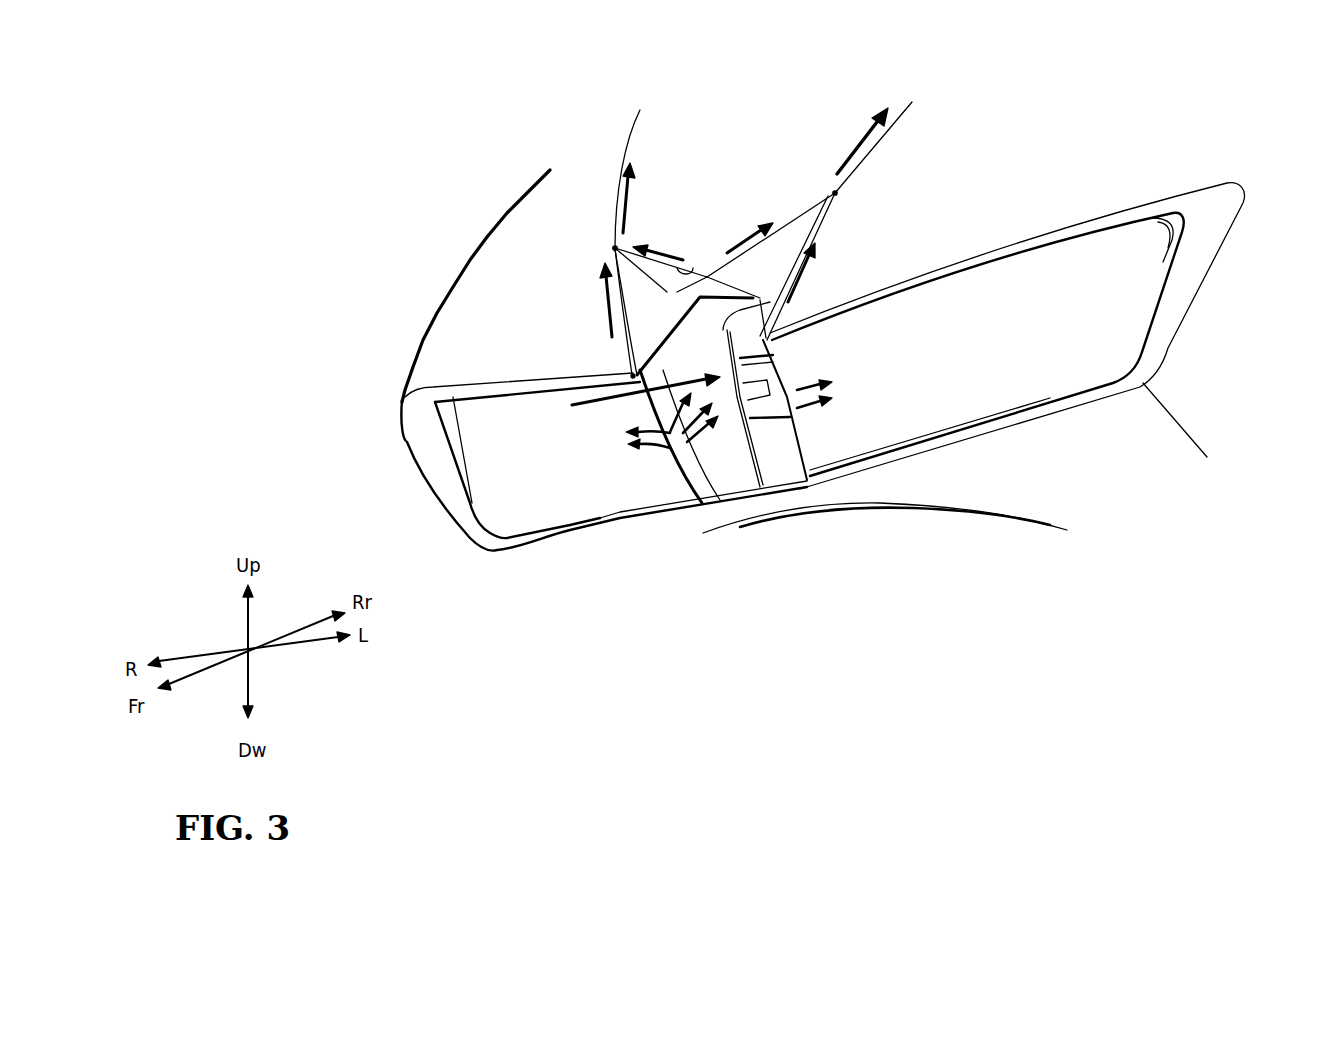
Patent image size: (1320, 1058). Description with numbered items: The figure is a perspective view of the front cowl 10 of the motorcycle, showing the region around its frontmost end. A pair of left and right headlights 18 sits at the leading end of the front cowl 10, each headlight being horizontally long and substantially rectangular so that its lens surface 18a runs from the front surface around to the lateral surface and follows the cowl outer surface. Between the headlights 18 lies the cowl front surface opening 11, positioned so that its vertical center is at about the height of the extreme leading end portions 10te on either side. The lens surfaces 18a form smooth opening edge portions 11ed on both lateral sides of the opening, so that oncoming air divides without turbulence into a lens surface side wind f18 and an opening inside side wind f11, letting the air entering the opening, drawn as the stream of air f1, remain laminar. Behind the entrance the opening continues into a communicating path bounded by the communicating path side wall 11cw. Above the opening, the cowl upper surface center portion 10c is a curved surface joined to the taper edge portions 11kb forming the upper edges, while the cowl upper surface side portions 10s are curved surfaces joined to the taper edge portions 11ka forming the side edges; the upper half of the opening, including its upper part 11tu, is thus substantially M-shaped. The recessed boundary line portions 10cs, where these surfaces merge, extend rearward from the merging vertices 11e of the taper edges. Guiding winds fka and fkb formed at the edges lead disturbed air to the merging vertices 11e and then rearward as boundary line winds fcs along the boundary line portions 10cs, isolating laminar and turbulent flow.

The front cowl 10 is at (428, 289).
The cowl upper surface side portion 10s is at (500, 247).
The cowl upper surface center portion 10c is at (702, 145).
The boundary line portion 10cs is at (620, 177).
The extreme leading end portion 10te is at (628, 372).
The cowl front surface opening 11 is at (700, 380).
The upper portion of center panel 11tu is at (707, 275).
The merging vertex 11e is at (615, 248).
The taper edge portion 11kb is at (683, 268).
The taper edge portion 11ka is at (603, 292).
The opening edge portion 11ed is at (668, 480).
The communicating path side wall 11cw is at (728, 478).
The headlight 18 is at (585, 462).
The lens surface 18a is at (537, 487).
The stream of air f1 is at (577, 376).
The opening inside side wind f11 is at (703, 428).
The lens surface side wind f18 is at (673, 450).
The guiding wind fka is at (603, 290).
The guiding wind fkb is at (663, 258).
The boundary line wind fcs is at (633, 192).